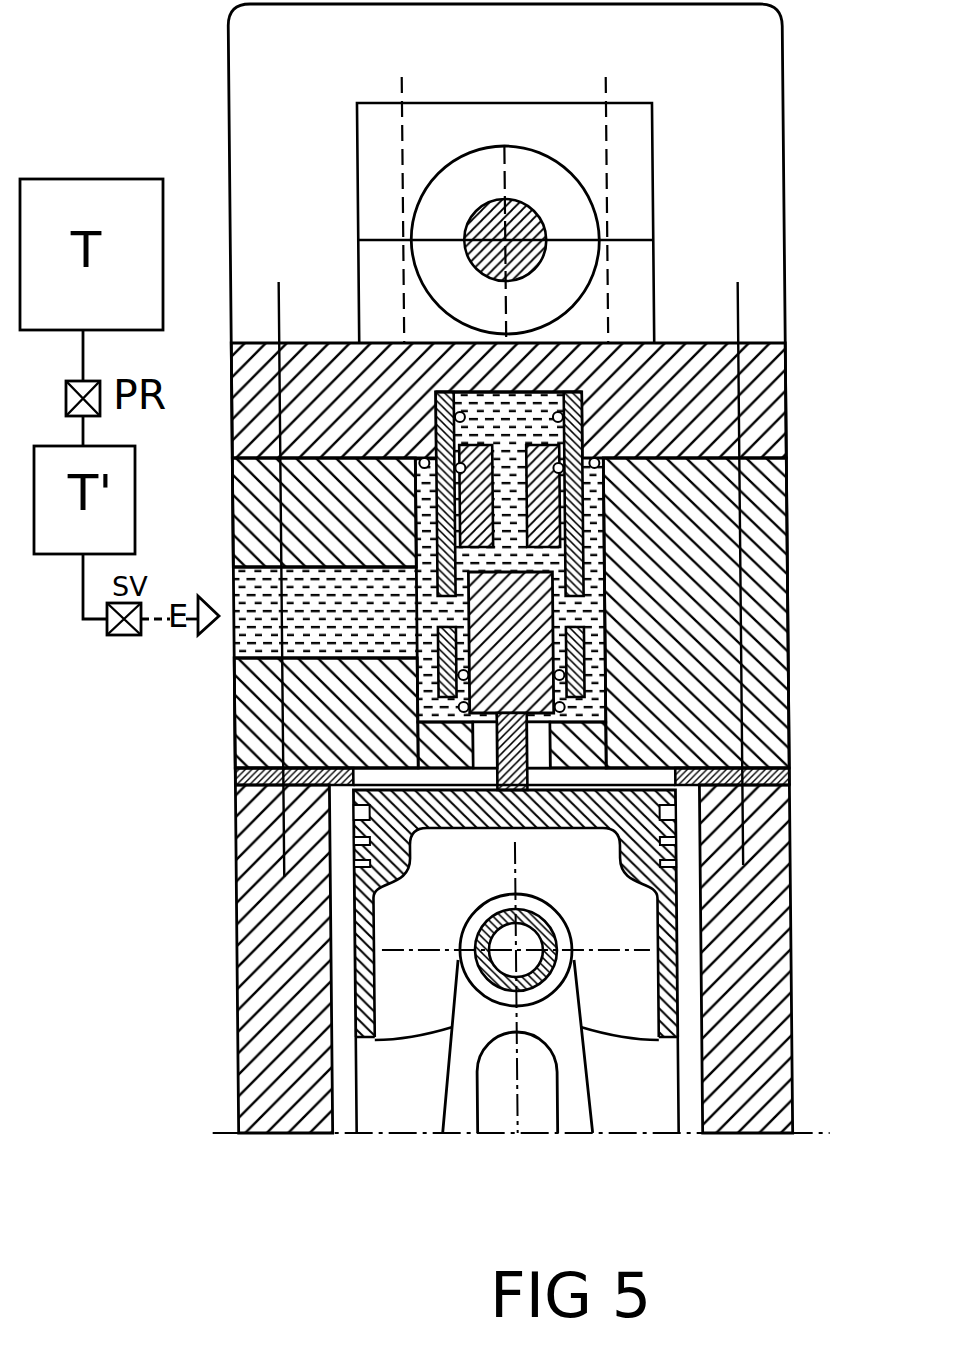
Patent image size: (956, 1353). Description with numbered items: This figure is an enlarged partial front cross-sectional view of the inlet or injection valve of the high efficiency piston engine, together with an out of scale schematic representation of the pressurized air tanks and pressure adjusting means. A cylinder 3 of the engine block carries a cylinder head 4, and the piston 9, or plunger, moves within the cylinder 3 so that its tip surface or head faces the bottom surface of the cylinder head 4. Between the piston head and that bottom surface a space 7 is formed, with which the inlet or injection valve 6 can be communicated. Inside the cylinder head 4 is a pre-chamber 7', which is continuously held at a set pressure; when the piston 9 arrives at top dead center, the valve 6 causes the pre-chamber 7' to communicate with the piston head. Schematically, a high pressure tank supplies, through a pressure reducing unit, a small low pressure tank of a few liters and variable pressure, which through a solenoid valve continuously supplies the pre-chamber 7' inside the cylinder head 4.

The cylinder 3 is at (258, 973).
The cylinder head 4 is at (236, 519).
The inlet or injection valve 6 is at (605, 600).
The space 7 is at (555, 716).
The cylinder head pre-chamber 7' is at (371, 602).
The piston 9 is at (640, 832).